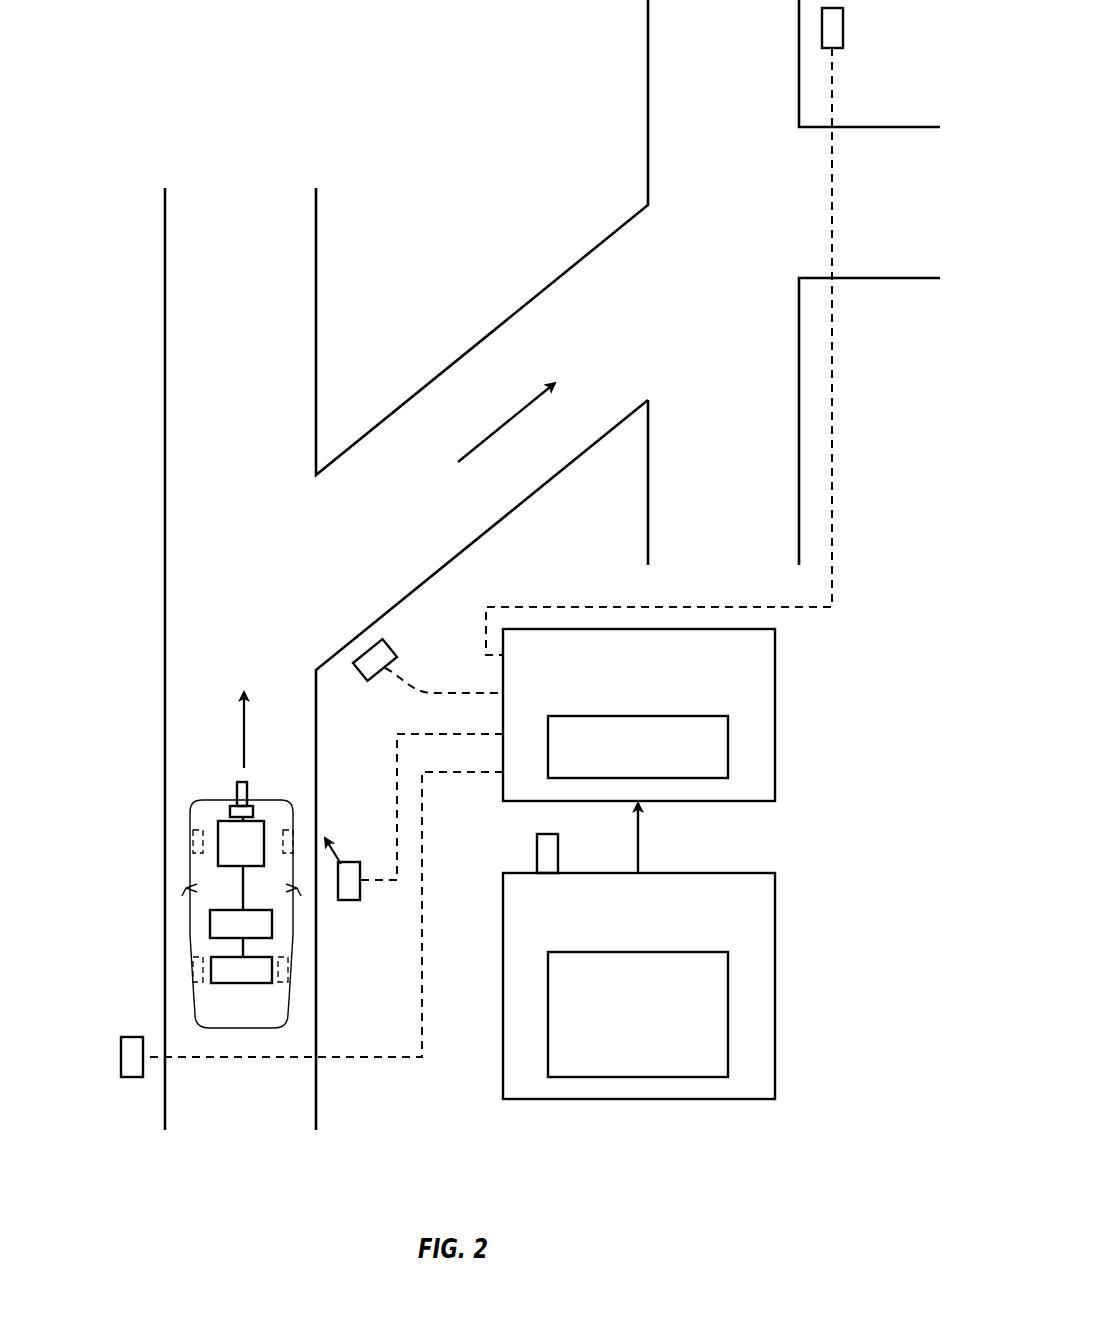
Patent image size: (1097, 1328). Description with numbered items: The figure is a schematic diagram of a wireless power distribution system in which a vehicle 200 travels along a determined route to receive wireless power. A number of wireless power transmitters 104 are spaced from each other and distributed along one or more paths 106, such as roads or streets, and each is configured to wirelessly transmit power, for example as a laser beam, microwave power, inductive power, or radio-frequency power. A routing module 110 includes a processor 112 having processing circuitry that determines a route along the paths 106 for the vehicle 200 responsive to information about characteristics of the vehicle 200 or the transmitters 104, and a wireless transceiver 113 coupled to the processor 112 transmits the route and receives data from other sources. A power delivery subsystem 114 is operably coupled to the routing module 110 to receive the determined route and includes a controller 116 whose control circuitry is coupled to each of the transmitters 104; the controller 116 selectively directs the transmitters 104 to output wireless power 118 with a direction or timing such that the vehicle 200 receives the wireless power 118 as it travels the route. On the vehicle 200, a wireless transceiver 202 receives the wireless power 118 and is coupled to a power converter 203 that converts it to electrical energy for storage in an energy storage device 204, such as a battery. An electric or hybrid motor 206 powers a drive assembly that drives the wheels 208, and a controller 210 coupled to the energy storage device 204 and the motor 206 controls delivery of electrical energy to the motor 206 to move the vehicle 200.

The wireless power transmitter 104 is at (843, 25).
The path 106 is at (190, 380).
The routing module 110 is at (738, 923).
The processor 112 is at (713, 1023).
The wireless transceiver 113 is at (548, 850).
The power delivery subsystem 114 is at (717, 694).
The controller 116 is at (712, 759).
The wireless power 118 is at (338, 852).
The vehicle 200 is at (195, 1000).
The wireless transceiver 202 is at (238, 792).
The power converter 203 is at (232, 810).
The energy storage device 204 is at (233, 850).
The motor 206 is at (222, 968).
The wheels 208 is at (193, 841).
The controller 210 is at (220, 921).